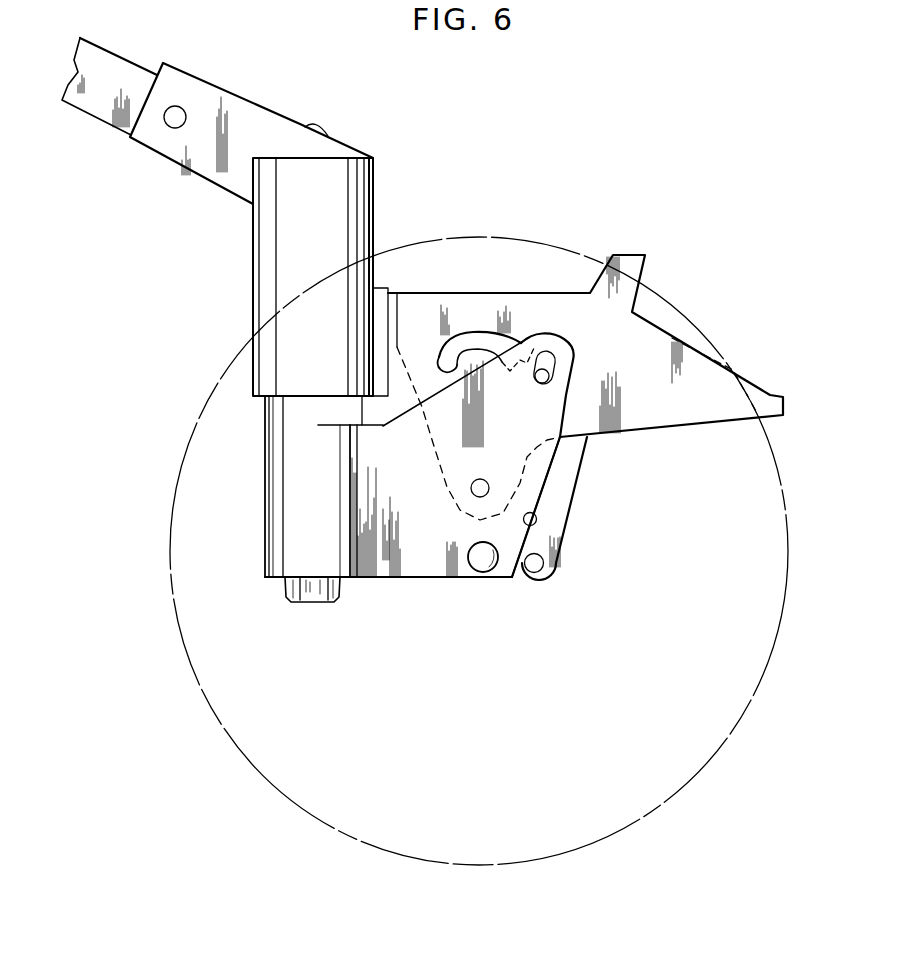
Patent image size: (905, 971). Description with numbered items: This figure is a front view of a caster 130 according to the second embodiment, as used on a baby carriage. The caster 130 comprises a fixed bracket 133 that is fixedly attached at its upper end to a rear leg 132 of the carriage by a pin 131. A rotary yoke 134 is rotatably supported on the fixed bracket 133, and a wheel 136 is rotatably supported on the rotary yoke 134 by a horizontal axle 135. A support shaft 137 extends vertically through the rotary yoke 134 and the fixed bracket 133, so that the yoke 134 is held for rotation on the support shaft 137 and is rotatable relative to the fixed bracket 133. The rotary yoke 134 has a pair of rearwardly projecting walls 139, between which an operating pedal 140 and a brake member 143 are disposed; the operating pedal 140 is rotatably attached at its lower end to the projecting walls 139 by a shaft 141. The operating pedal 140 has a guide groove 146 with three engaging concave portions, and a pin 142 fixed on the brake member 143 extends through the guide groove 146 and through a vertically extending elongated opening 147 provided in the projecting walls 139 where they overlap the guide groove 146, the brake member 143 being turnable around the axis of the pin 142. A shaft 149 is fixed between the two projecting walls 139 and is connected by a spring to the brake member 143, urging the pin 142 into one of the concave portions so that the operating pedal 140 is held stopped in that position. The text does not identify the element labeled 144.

The caster 130 is at (430, 174).
The pin 131 is at (183, 108).
The rear leg 132 is at (115, 58).
The fixed bracket 133 is at (251, 270).
The rotary yoke 134 is at (263, 513).
The horizontal axle 135 is at (482, 572).
The wheel 136 is at (205, 694).
The support shaft 137 is at (312, 592).
The projecting walls 139 is at (437, 552).
The operating pedal 140 is at (559, 288).
The shaft 141 is at (472, 492).
The pin 142 is at (532, 353).
The brake member 143 is at (568, 485).
The pivot hole 144 is at (543, 584).
The guide groove 146 is at (481, 328).
The elongated openings 147 is at (553, 363).
The shaft 149 is at (537, 523).